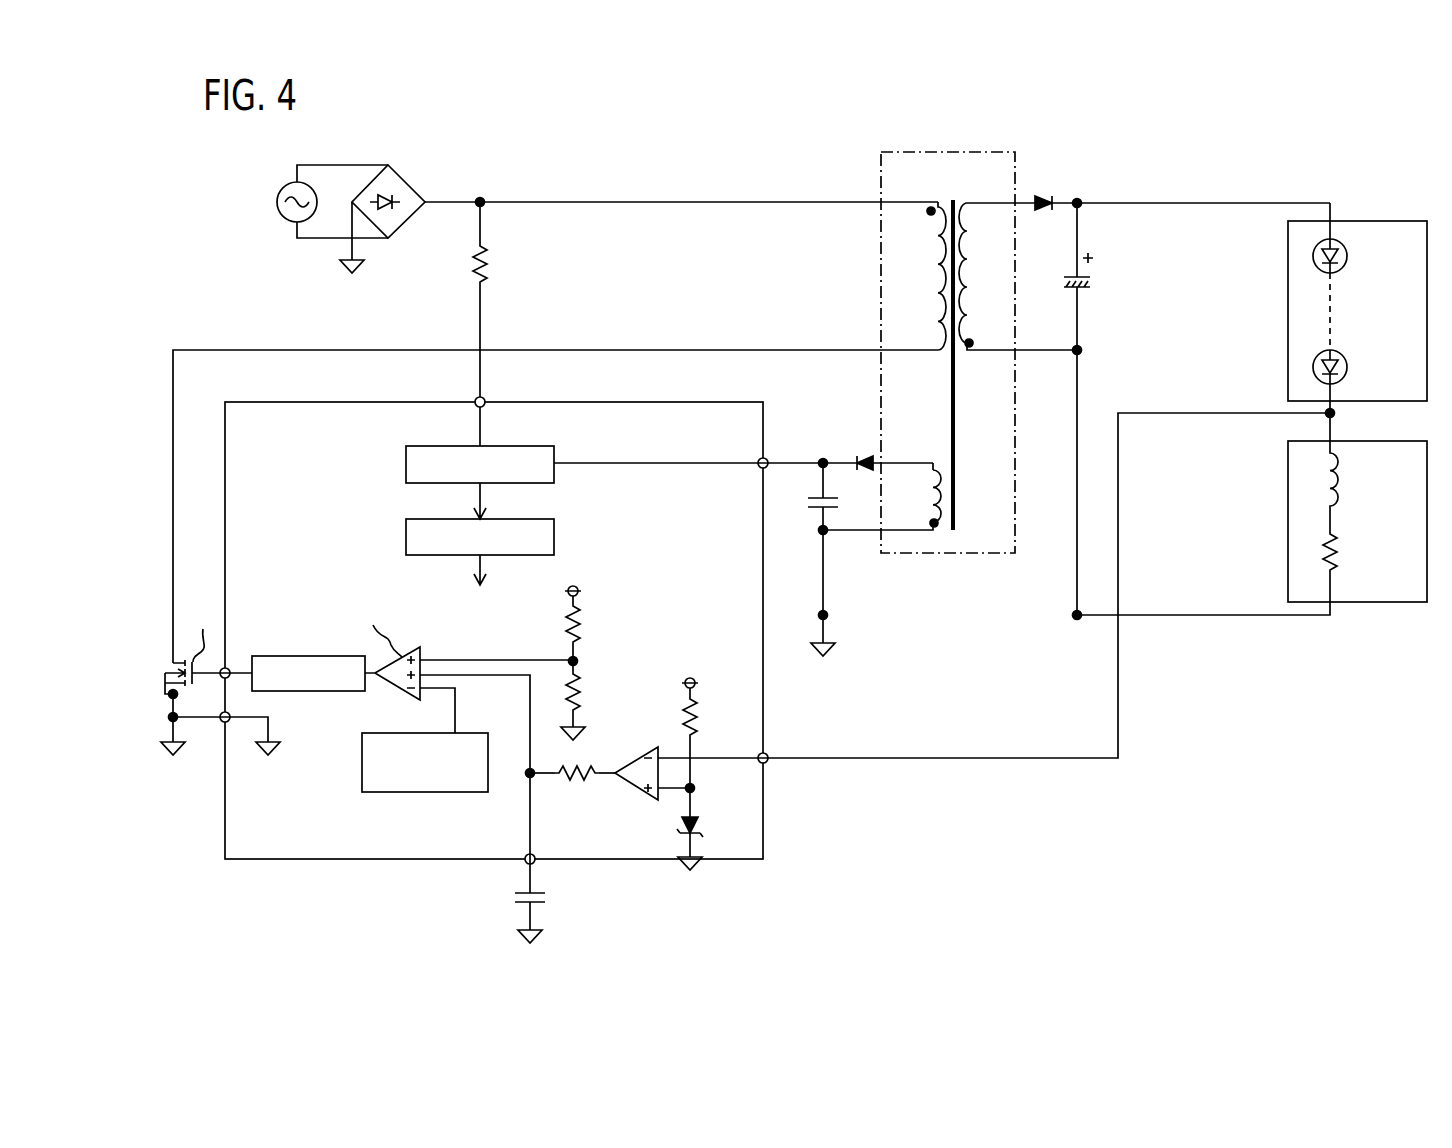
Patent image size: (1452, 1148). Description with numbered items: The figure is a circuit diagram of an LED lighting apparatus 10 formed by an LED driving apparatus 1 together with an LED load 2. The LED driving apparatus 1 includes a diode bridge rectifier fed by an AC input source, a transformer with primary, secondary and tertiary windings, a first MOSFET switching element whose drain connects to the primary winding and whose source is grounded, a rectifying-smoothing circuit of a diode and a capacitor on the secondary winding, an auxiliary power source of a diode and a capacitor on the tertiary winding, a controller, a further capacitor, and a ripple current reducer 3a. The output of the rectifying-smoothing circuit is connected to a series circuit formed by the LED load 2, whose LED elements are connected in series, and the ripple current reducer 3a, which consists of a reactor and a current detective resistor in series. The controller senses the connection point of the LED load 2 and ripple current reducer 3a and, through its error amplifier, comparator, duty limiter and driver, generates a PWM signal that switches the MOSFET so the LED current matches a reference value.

The LED lighting apparatus 10 is at (539, 112).
The LED driving apparatus 1 is at (666, 159).
The LED load 2 is at (1356, 220).
The ripple current reducer 3a is at (1356, 440).